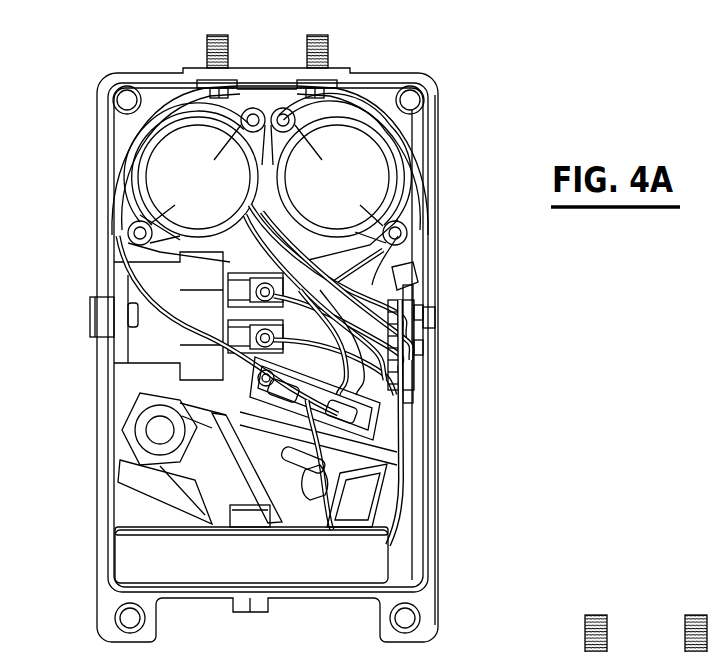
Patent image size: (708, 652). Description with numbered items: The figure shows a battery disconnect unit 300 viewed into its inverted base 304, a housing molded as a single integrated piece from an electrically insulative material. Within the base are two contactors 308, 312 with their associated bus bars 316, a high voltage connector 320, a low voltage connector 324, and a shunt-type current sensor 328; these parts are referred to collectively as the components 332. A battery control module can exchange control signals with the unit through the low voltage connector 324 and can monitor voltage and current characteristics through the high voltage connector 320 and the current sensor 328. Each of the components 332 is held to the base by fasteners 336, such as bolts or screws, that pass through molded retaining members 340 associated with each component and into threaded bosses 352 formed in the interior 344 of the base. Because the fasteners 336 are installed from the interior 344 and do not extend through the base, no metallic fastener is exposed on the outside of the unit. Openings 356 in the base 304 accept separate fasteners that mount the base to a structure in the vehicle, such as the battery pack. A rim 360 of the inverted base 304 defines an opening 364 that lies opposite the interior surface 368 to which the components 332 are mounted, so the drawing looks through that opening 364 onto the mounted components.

The battery disconnect unit 300 is at (99, 63).
The inverted base 304 is at (97, 562).
The contactor 308 is at (210, 191).
The contactor 312 is at (349, 191).
The bus bars 316 is at (668, 651).
The high voltage connector 320 is at (387, 422).
The low voltage connector 324 is at (400, 343).
The current sensor 328 is at (360, 494).
The components 332 is at (117, 409).
The fasteners 336 is at (130, 238).
The molded retaining members 340 is at (142, 211).
The interior 344 is at (138, 509).
The threaded bosses 352 is at (403, 258).
The openings 356 is at (390, 615).
The rim 360 is at (438, 548).
The opening 364 is at (402, 464).
The interior surface 368 is at (160, 383).